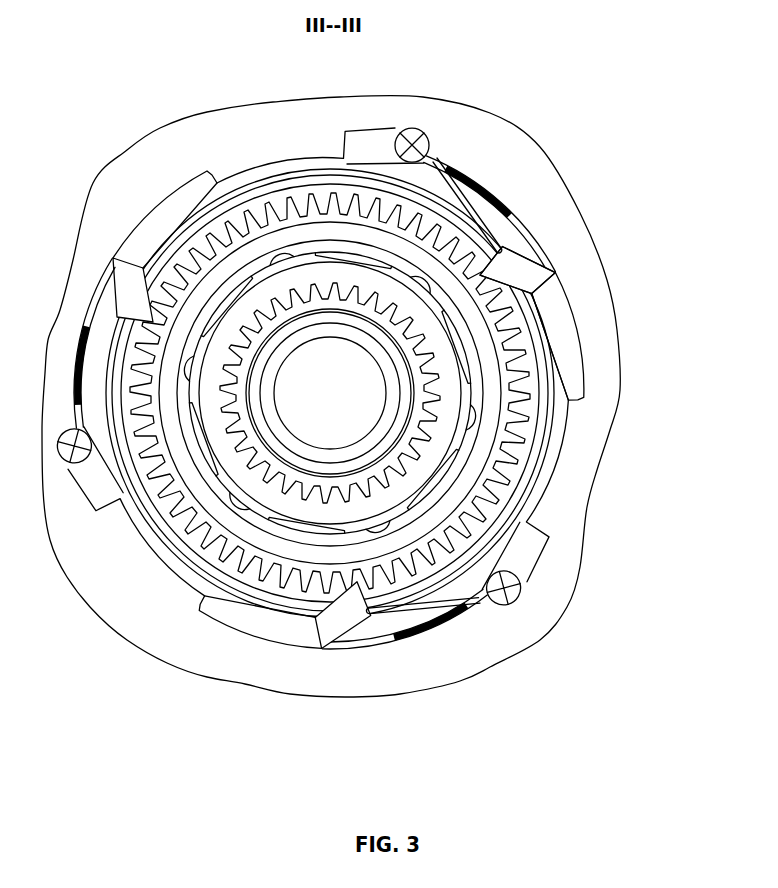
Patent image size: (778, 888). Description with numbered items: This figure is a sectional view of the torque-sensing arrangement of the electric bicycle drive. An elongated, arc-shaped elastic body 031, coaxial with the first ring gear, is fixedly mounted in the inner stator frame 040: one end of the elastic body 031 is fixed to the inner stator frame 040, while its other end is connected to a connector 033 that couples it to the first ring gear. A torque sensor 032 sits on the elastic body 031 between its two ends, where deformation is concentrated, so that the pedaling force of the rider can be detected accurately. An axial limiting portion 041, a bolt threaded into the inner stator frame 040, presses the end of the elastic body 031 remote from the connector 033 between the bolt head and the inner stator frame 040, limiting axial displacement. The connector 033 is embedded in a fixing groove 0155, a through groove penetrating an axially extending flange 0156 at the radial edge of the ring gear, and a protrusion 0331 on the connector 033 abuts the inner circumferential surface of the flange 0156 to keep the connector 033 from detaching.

The inner stator frame 040 is at (603, 308).
The axial limiting portion 041 is at (423, 137).
The elastic body 031 is at (463, 197).
The torque sensor 032 is at (473, 176).
The connector 033 is at (517, 276).
The protrusion 0331 is at (517, 313).
The fixing groove 0155 is at (527, 300).
The flange 0156 is at (542, 433).